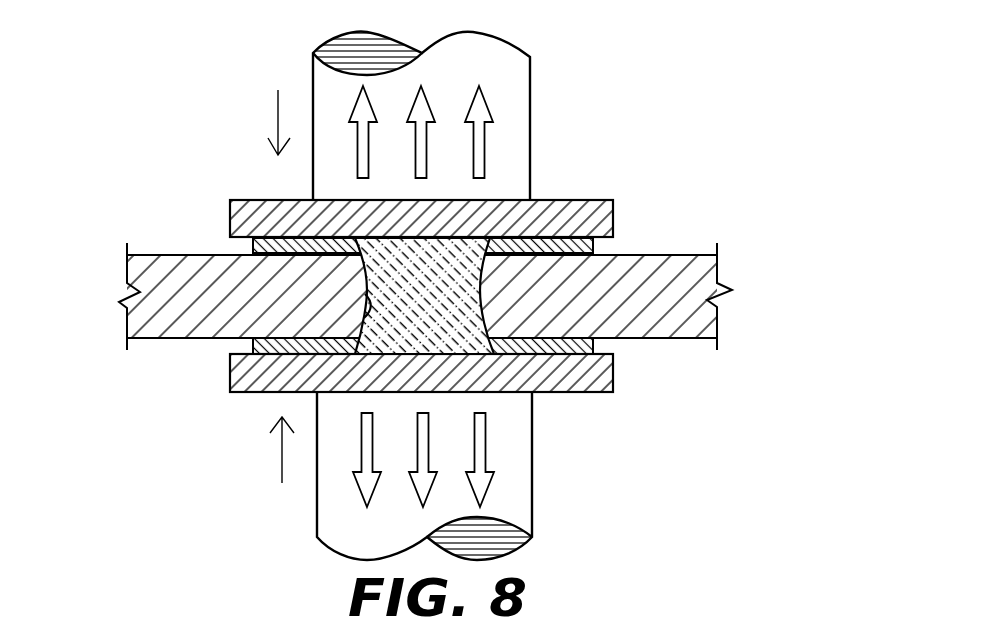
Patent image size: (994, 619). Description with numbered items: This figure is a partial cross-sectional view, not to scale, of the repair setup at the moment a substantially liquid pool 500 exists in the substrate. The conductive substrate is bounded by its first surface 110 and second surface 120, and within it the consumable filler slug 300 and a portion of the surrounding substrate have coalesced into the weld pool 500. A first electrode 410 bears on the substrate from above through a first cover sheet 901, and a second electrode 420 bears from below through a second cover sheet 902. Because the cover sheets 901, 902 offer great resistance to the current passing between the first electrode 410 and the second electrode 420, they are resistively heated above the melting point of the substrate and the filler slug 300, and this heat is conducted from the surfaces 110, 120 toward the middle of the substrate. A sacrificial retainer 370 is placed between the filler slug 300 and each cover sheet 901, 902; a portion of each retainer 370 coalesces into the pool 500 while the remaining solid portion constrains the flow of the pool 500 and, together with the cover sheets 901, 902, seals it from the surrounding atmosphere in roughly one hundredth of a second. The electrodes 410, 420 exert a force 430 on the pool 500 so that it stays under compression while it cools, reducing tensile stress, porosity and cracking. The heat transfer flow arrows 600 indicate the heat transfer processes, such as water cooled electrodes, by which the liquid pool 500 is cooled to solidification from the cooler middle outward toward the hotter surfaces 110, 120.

The first surface 110 is at (620, 254).
The second surface 120 is at (657, 338).
The consumable filler slug 300 is at (177, 610).
The sacrificial retainer 370 is at (253, 243).
The first electrode 410 is at (530, 60).
The second electrode 420 is at (532, 513).
The force 430 is at (277, 115).
The weld pool 500 is at (287, 353).
The heat transfer flow arrows 600 is at (483, 160).
The first cover sheet 901 is at (615, 203).
The second cover sheet 902 is at (615, 385).